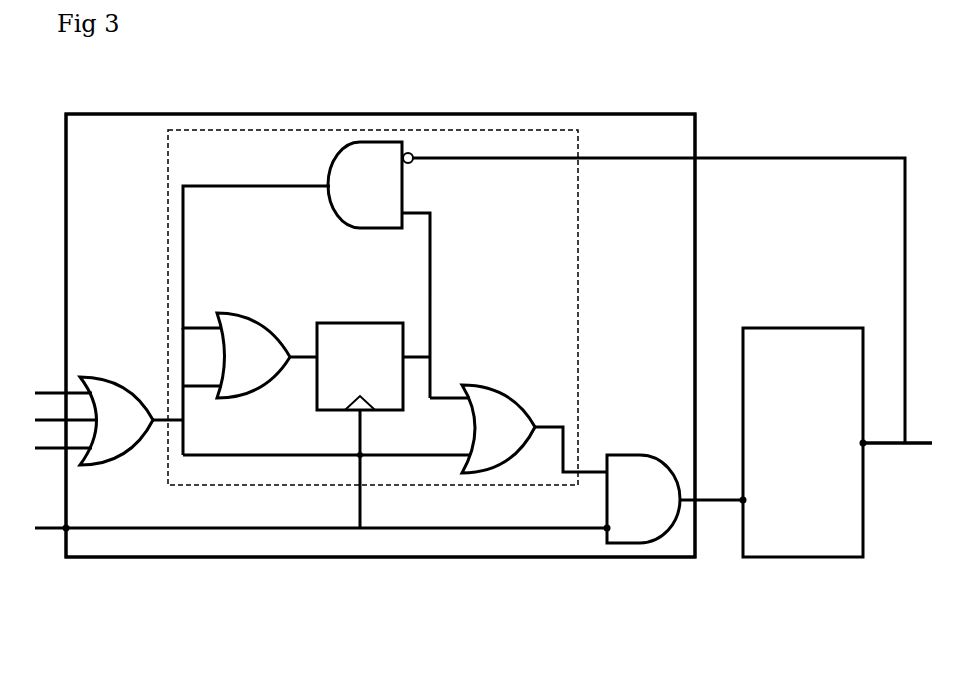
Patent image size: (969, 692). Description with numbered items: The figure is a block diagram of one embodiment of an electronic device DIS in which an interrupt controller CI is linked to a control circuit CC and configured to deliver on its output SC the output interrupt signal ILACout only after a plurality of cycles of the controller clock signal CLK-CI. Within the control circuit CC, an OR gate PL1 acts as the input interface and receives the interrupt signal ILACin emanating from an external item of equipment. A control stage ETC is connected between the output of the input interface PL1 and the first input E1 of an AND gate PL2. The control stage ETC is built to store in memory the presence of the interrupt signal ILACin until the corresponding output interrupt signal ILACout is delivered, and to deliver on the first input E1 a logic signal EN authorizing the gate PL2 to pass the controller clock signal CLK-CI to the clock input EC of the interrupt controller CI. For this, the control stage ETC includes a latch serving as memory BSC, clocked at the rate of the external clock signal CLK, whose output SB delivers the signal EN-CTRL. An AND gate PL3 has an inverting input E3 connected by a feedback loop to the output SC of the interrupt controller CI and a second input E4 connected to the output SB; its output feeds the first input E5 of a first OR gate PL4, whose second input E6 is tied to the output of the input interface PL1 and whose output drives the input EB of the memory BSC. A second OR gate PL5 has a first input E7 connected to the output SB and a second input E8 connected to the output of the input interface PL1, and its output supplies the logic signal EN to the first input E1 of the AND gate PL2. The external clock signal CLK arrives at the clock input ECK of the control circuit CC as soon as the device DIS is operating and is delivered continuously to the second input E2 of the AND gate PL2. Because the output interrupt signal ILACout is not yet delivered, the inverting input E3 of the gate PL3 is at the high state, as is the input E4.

The electronic device DIS is at (181, 598).
The control circuit CC is at (391, 560).
The control stage ETC is at (280, 128).
The AND gate PL3 is at (337, 214).
The inverting input E3 is at (406, 150).
The output interrupt signal ILACout is at (672, 288).
The first input E5 is at (212, 322).
The second input E6 is at (215, 402).
The first OR gate PL4 is at (258, 400).
The input EB is at (300, 354).
The memory BSC is at (350, 321).
The output SB is at (418, 354).
The second input E4 is at (405, 232).
The signal EN-CTRL is at (500, 296).
The first input E7 is at (462, 390).
The second input E8 is at (460, 472).
The second OR gate PL5 is at (505, 470).
The logic signal EN is at (540, 427).
The first input E1 is at (590, 465).
The AND gate PL2 is at (622, 546).
The input interface PL1 is at (130, 466).
The interrupt signal ILACin is at (48, 447).
The clock input ECK is at (60, 531).
The external clock signal CLK is at (233, 469).
The second input E2 is at (603, 532).
The controller clock signal CLK-CI is at (710, 504).
The clock input EC is at (740, 497).
The interrupt controller CI is at (803, 442).
The output SC is at (868, 447).